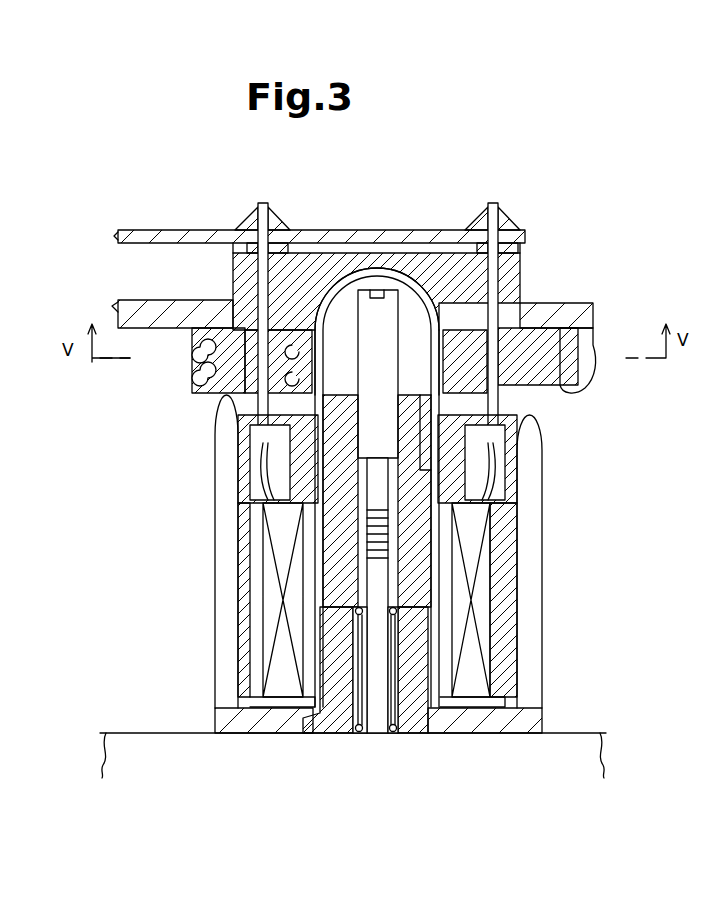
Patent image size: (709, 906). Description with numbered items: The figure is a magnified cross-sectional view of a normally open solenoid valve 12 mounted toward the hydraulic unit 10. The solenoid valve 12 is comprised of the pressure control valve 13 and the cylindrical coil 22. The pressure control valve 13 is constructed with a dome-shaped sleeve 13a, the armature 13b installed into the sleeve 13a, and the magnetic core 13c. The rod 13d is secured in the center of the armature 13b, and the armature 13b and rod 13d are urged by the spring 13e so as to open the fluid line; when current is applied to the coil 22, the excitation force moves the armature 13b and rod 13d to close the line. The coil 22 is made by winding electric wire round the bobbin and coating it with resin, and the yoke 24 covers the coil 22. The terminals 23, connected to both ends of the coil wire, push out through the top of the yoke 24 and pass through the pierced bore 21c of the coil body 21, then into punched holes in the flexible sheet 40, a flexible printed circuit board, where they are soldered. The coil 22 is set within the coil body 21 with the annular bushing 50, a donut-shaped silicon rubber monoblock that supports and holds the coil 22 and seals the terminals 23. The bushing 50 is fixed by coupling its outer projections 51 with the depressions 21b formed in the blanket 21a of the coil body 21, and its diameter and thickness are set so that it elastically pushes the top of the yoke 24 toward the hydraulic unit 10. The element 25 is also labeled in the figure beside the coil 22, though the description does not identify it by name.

The hydraulic unit 10 is at (130, 726).
The solenoid valve 12 is at (198, 523).
The pressure control valve 13 is at (417, 283).
The sleeve 13a is at (352, 280).
The armature 13b is at (420, 572).
The magnetic core 13c is at (420, 652).
The rod 13d is at (373, 732).
The spring 13e is at (397, 731).
The coil body 21 is at (122, 300).
The blanket 21a is at (196, 383).
The depressions 21b is at (210, 347).
The pierced bore 21c is at (498, 290).
The coil 22 is at (490, 548).
The terminals 23 is at (258, 280).
The yoke 24 is at (224, 588).
The lead wire 25 is at (508, 412).
The flexible sheet 40 is at (151, 230).
The bushing 50 is at (548, 340).
The projections 51 is at (215, 393).